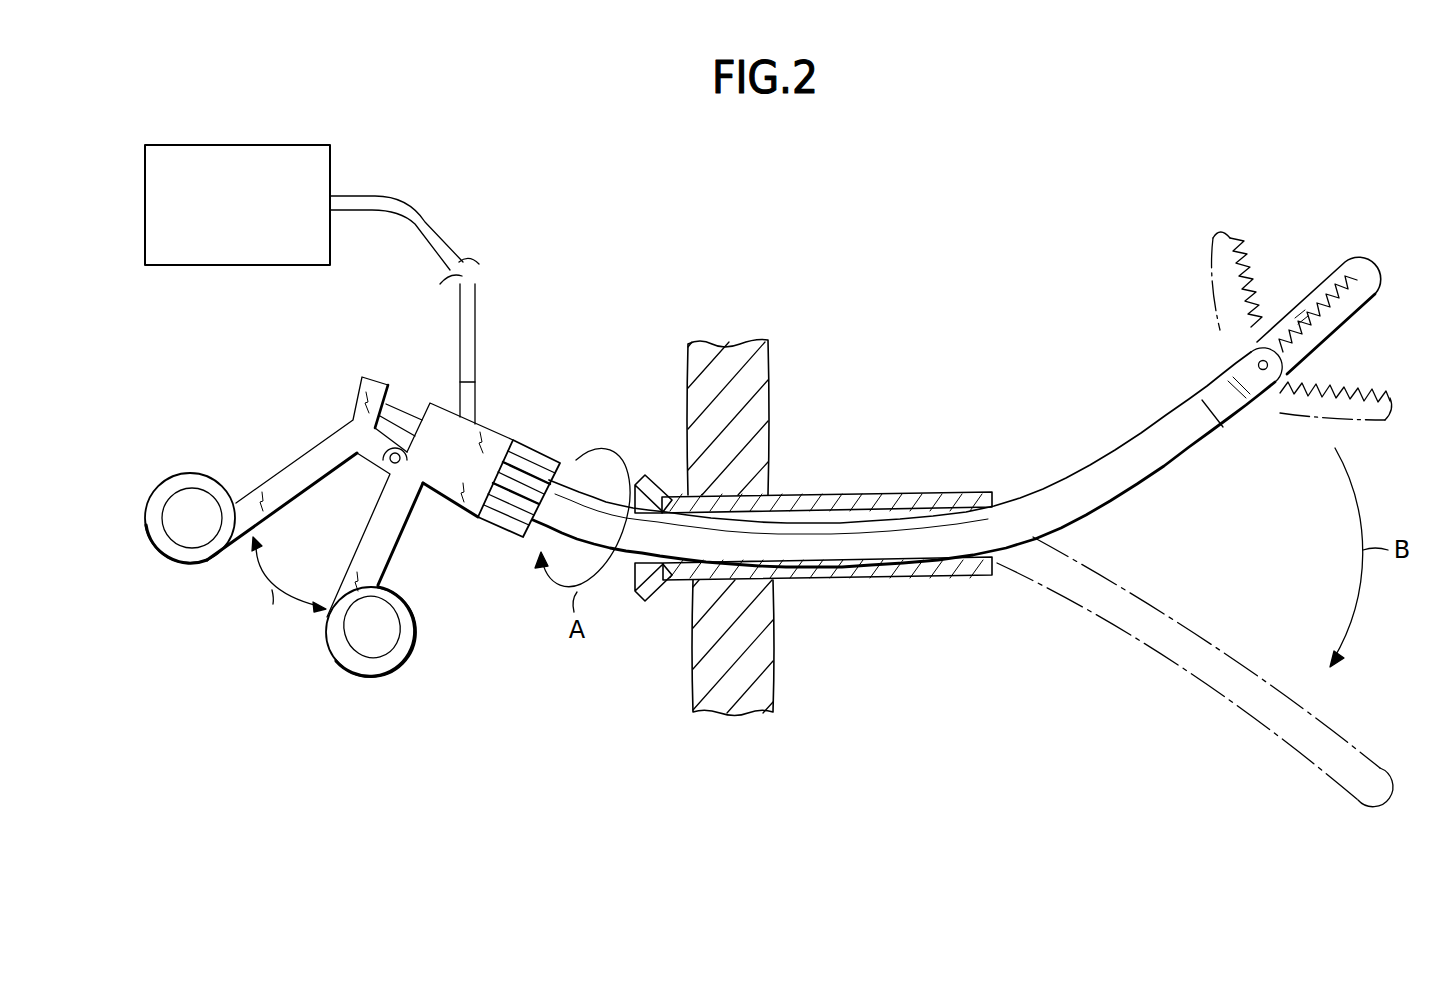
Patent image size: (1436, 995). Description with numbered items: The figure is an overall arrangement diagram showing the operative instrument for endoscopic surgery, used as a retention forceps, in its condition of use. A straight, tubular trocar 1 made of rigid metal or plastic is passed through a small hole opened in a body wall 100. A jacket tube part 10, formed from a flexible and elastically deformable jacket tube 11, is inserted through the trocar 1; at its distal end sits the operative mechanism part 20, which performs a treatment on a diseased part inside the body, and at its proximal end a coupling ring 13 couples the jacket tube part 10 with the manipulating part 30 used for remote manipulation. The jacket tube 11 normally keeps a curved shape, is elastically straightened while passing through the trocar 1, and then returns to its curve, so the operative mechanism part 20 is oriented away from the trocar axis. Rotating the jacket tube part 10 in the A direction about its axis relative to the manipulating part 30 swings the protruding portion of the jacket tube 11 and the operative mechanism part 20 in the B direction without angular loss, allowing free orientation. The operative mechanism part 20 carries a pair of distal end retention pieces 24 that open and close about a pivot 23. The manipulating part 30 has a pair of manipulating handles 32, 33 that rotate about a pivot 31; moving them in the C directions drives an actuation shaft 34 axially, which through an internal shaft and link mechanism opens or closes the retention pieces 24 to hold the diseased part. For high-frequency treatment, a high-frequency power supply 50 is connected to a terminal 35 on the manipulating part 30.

The trocar 1 is at (848, 493).
The jacket tube part 10 is at (1050, 482).
The jacket tube 11 is at (1143, 480).
The coupling ring 13 is at (493, 527).
The operative mechanism part 20 is at (1247, 343).
The pivot 23 is at (1263, 373).
The distal end retention pieces 24 is at (1342, 305).
The manipulating part 30 is at (294, 432).
The pivot 31 is at (382, 468).
The manipulating handle 32 is at (377, 677).
The manipulating handle 33 is at (182, 565).
The actuation shaft 34 is at (403, 410).
The terminal 35 is at (477, 388).
The high-frequency power supply 50 is at (332, 158).
The body wall 100 is at (690, 353).